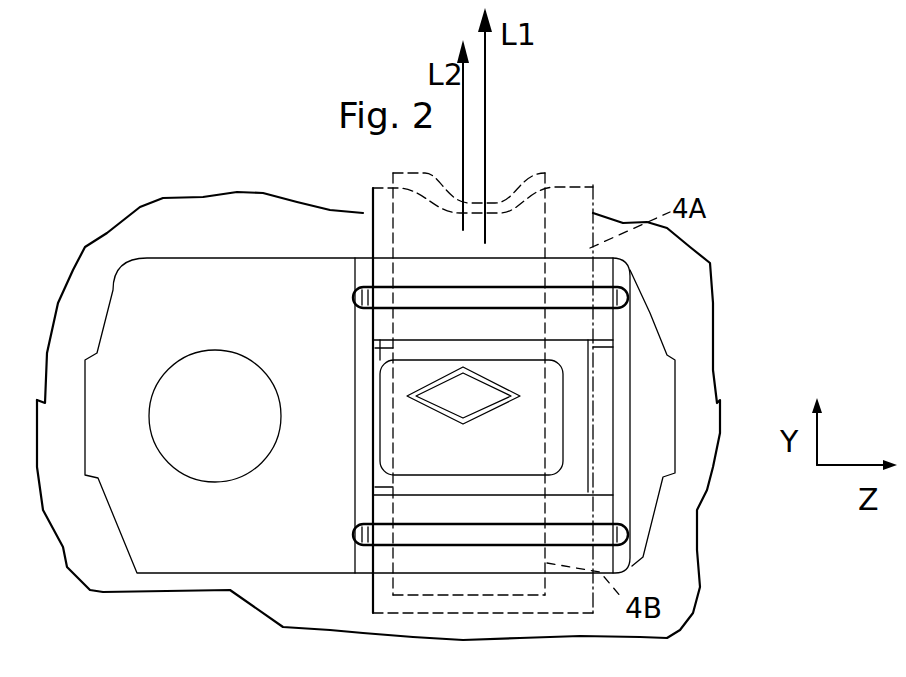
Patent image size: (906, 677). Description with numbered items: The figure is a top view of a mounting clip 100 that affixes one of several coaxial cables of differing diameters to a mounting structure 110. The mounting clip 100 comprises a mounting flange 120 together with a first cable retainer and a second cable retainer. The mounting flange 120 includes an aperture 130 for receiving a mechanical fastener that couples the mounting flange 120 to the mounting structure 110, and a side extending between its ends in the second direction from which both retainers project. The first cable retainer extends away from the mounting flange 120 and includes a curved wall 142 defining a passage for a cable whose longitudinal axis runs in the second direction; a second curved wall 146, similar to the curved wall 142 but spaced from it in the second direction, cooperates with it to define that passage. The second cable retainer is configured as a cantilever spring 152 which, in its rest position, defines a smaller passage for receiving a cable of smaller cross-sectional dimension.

The mounting clip 100 is at (634, 349).
The mounting structure 110 is at (313, 612).
The mounting flange 120 is at (380, 415).
The aperture 130 is at (170, 458).
The curved wall 142 is at (600, 515).
The second curved wall 146 is at (602, 276).
The cantilever spring 152 is at (408, 378).